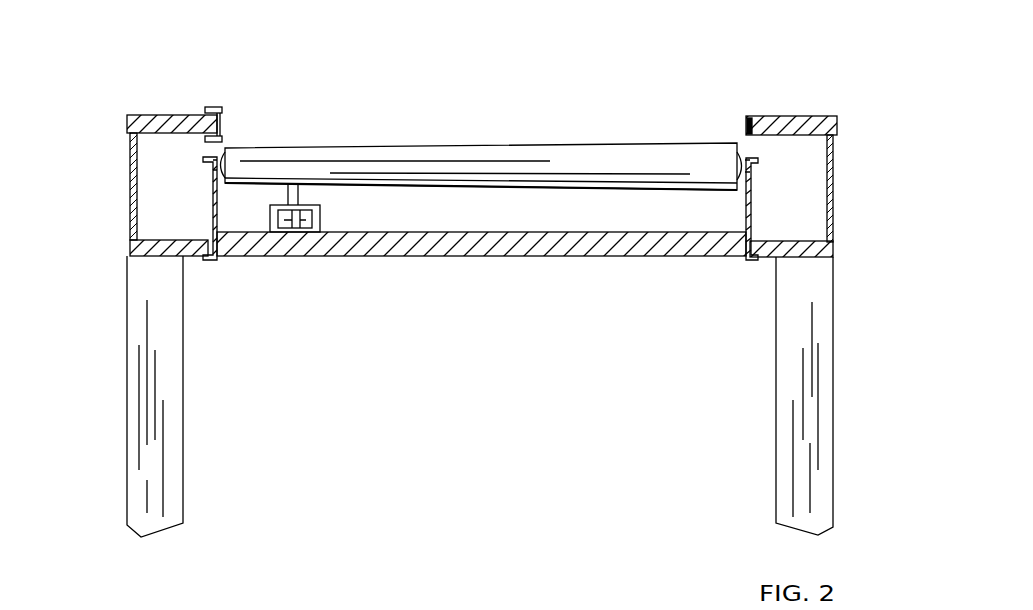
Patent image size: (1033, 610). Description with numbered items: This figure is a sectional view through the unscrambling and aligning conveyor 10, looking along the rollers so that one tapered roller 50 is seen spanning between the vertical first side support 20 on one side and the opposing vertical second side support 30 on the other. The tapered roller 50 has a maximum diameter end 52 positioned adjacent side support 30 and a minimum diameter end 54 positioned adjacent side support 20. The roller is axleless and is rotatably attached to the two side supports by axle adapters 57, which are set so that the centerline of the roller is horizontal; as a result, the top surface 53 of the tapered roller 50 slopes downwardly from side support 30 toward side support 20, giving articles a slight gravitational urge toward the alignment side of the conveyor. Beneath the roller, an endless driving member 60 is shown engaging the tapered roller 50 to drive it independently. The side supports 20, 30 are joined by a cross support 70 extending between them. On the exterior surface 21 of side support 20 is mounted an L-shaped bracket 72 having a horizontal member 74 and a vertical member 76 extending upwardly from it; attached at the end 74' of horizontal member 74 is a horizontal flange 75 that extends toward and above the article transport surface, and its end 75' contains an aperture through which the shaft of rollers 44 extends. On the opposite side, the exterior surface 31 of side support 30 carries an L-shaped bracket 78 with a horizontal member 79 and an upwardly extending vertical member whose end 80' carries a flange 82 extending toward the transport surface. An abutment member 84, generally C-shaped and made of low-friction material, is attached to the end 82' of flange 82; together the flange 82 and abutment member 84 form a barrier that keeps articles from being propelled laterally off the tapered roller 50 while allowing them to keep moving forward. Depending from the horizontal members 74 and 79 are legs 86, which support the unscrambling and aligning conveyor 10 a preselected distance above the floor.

The unscrambling and aligning conveyor 10 is at (646, 72).
The first side support 20 is at (213, 226).
The exterior surface 21 is at (212, 212).
The second side support 30 is at (752, 207).
The exterior surface 31 is at (752, 228).
The rollers 44 is at (220, 108).
The tapered roller 50 is at (559, 148).
The maximum diameter end 52 is at (720, 143).
The top surface 53 is at (370, 146).
The minimum diameter end 54 is at (228, 172).
The axle adapter 57 is at (212, 170).
The endless driving member 60 is at (299, 193).
The cross support 70 is at (455, 256).
The L-shaped bracket 72 is at (115, 247).
The horizontal member 74 is at (181, 278).
The end 74' is at (97, 119).
The horizontal flange 75 is at (172, 94).
The end 75' is at (203, 85).
The vertical member 76 is at (130, 200).
The L-shaped bracket 78 is at (848, 253).
The horizontal member 79 is at (772, 257).
The end 80' is at (868, 172).
The flange 82 is at (808, 101).
The end 82' is at (792, 88).
The abutment member 84 is at (748, 117).
The legs 86 is at (174, 450).